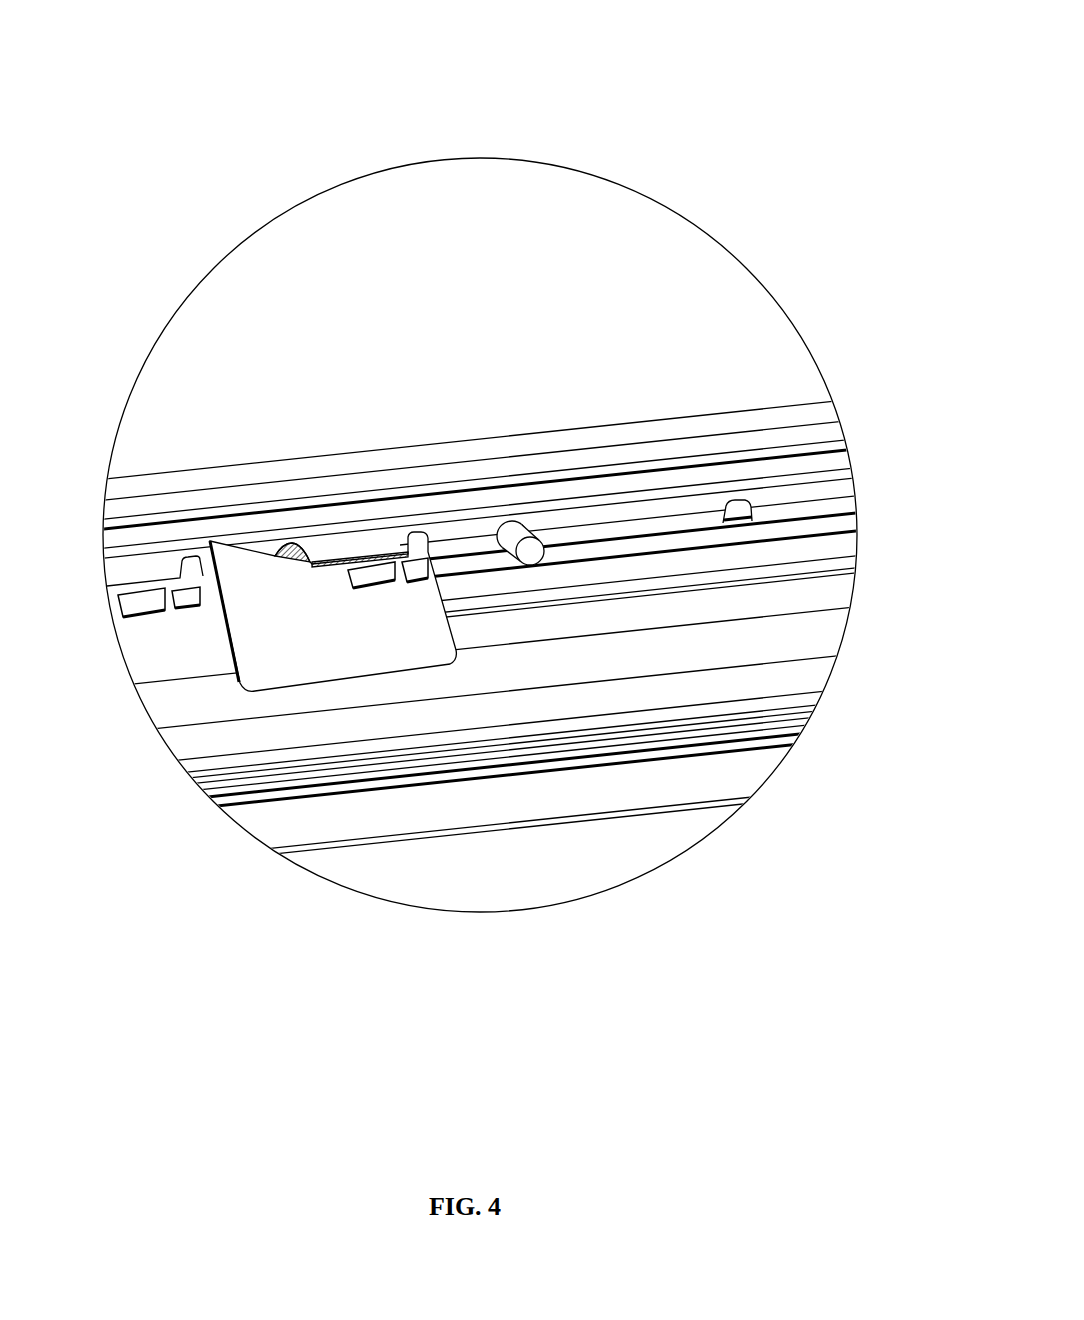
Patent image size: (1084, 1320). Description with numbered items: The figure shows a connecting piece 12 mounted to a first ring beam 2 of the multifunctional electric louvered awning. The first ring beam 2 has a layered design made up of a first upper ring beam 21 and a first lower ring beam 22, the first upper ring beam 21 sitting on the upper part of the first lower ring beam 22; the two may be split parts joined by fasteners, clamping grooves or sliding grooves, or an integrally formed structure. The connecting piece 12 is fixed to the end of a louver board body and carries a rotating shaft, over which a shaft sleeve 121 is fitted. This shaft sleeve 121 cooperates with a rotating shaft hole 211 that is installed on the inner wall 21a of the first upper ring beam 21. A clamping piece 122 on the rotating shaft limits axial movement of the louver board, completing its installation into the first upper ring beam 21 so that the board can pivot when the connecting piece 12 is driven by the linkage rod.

The first ring beam 2 is at (463, 408).
The connecting piece 12 is at (207, 657).
The shaft sleeve 121 is at (288, 597).
The clamping piece 122 is at (519, 515).
The first upper ring beam 21 is at (647, 438).
The rotating shaft hole 211 is at (750, 510).
The inner wall 21a is at (762, 515).
The first lower ring beam 22 is at (476, 745).